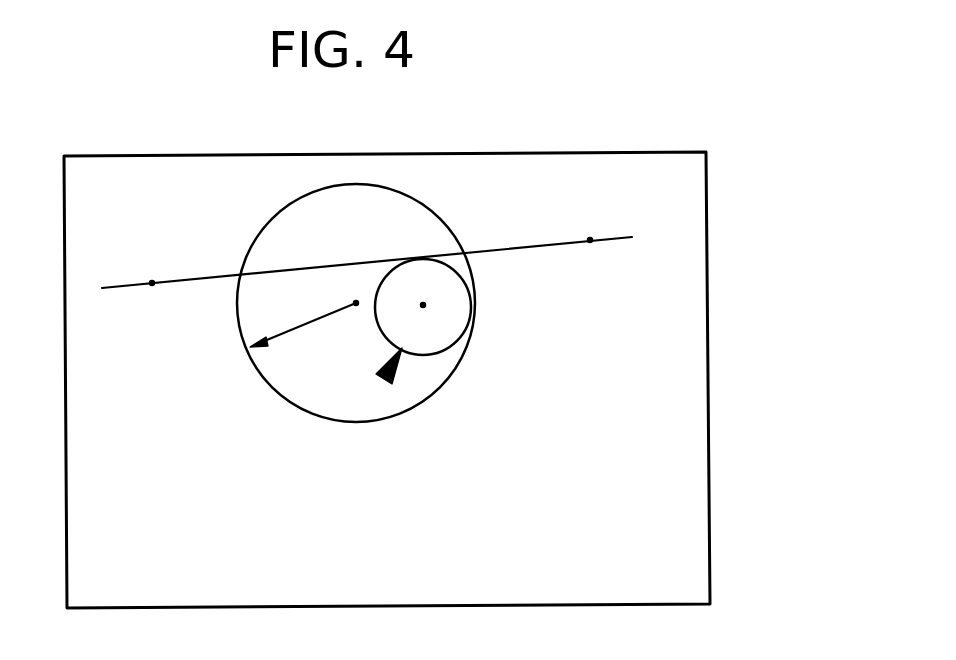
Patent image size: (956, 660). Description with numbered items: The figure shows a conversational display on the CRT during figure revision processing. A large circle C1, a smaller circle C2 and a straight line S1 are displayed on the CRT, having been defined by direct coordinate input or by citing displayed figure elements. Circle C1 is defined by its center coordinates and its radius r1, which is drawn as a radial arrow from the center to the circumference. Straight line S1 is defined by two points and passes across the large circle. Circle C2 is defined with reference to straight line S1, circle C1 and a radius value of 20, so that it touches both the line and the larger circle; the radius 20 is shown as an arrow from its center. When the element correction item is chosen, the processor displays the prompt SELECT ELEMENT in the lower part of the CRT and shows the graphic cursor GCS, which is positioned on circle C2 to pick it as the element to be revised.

The element CRT is at (710, 506).
The straight line S1 is at (190, 281).
The circle C1 is at (281, 212).
The circle C2 is at (377, 287).
The radius value 20 is at (423, 305).
The radius r1 is at (303, 322).
The graphic cursor GCS is at (385, 380).